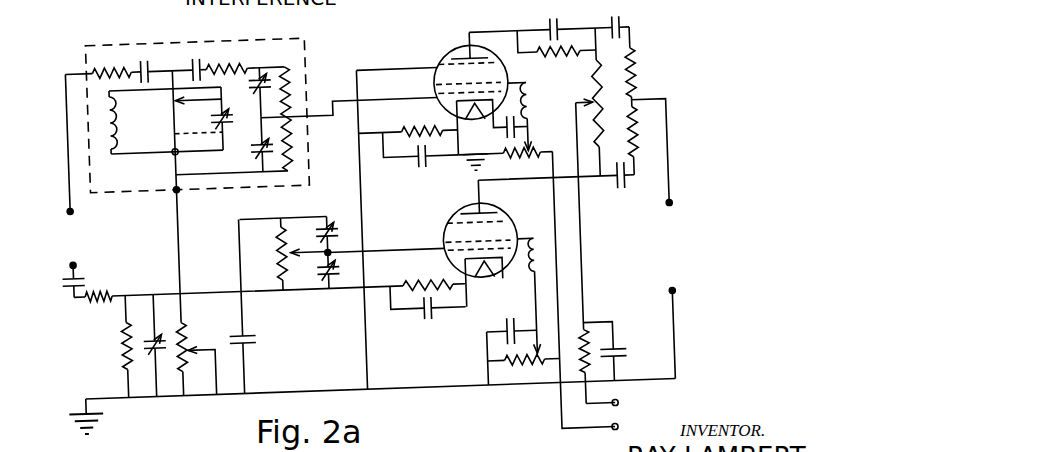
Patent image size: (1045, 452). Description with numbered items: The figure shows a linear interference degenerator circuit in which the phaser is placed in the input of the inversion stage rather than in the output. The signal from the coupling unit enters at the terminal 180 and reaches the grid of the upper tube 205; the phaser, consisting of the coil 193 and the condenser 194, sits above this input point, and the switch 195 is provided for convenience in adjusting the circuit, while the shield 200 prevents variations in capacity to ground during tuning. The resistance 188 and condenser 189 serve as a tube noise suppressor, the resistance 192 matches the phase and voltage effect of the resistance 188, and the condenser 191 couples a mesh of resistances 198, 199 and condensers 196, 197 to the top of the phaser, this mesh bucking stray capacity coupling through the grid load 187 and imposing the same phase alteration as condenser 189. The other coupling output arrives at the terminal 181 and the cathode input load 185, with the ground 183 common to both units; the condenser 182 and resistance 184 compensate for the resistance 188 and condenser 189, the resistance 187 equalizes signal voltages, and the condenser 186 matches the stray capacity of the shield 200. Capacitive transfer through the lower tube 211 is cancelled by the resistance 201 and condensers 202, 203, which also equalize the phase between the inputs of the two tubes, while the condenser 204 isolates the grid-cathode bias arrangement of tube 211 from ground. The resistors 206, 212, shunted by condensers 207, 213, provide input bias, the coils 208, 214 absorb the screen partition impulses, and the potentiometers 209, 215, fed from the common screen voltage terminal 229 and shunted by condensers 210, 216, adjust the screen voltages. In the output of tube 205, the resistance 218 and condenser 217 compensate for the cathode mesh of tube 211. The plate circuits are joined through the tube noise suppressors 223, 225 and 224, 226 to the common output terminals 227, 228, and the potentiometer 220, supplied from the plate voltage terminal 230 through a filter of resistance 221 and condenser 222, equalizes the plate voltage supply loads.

The terminal 180 is at (68, 201).
The terminal 181 is at (71, 252).
The condenser 182 is at (58, 276).
The ground 183 is at (79, 401).
The resistance 184 is at (90, 293).
The cathode input load 185 is at (114, 326).
The condenser 186 is at (148, 345).
The resistance 187 is at (185, 327).
The resistance 188 is at (126, 61).
The condenser 189 is at (144, 54).
The condenser 191 is at (198, 57).
The resistance 192 is at (254, 62).
The coil 193 is at (135, 145).
The condenser 194 is at (236, 113).
The switch 195 is at (177, 94).
The condenser 196 is at (274, 70).
The condenser 197 is at (245, 144).
The resistance 198 is at (295, 94).
The resistance 199 is at (298, 144).
The shield 200 is at (223, 185).
The resistance 201 is at (285, 254).
The condenser 202 is at (316, 226).
The condenser 203 is at (320, 279).
The condenser 204 is at (242, 330).
The tube 205 is at (452, 60).
The resistor 206 is at (415, 127).
The condenser 207 is at (414, 162).
The coil 208 is at (540, 99).
The potentiometer 209 is at (536, 156).
The condenser 210 is at (497, 132).
The tube 211 is at (464, 206).
The resistor 212 is at (427, 273).
The condenser 213 is at (419, 314).
The coil 214 is at (540, 233).
The potentiometer 215 is at (532, 368).
The condenser 216 is at (505, 325).
The condenser 217 is at (554, 28).
The resistance 218 is at (546, 57).
The potentiometer 220 is at (599, 75).
The resistance 221 is at (584, 345).
The condenser 222 is at (622, 343).
The tube noise suppressor element 223 is at (626, 35).
The tube noise suppressor element 224 is at (617, 191).
The tube noise suppressor element 225 is at (646, 71).
The tube noise suppressor element 226 is at (646, 160).
The common output terminal 227 is at (675, 211).
The common output terminal 228 is at (675, 299).
The common screen voltage terminal 229 is at (605, 431).
The plate supply voltage terminal 230 is at (617, 406).